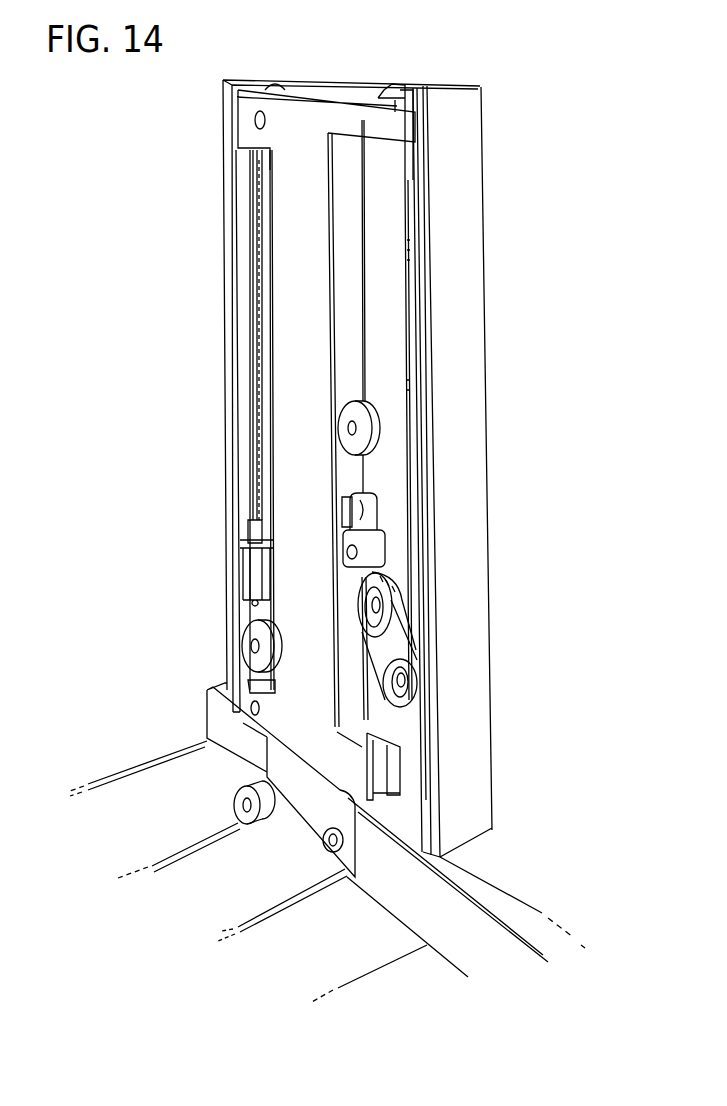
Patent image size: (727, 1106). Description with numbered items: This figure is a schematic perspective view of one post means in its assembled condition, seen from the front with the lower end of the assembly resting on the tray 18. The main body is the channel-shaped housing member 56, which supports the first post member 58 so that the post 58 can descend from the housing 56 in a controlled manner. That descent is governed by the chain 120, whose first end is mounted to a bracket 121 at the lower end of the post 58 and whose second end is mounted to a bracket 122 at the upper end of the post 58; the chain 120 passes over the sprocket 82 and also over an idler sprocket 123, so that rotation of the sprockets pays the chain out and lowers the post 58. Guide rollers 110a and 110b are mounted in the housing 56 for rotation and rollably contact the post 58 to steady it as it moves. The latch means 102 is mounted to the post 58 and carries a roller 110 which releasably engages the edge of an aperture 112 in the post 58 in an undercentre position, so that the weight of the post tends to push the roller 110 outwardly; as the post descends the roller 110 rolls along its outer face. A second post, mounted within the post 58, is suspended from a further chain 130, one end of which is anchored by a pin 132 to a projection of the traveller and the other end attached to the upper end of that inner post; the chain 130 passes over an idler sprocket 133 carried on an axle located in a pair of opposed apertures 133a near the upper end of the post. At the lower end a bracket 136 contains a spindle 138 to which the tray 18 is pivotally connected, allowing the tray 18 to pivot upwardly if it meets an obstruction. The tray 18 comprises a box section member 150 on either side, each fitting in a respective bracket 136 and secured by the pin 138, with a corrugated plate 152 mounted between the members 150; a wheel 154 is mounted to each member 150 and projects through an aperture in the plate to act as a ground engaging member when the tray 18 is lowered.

The tray 18 is at (465, 868).
The housing member 56 is at (218, 200).
The first post member 58 is at (272, 335).
The sprocket 82 is at (380, 620).
The latch means 102 is at (373, 550).
The roller 110 is at (373, 498).
The guide roller 110a is at (372, 408).
The guide roller 110b is at (238, 650).
The aperture 112 is at (385, 508).
The chain 120 is at (417, 295).
The bracket 121 is at (353, 773).
The bracket 122 is at (382, 117).
The idler sprocket 123 is at (412, 688).
The chain 130 is at (250, 252).
The pin 132 is at (260, 575).
The idler sprocket 133 is at (278, 80).
The apertures 133a is at (252, 120).
The bracket 136 is at (312, 815).
The spindle 138 is at (327, 853).
The box section member 150 is at (520, 900).
The corrugated plate 152 is at (233, 908).
The wheel 154 is at (237, 793).